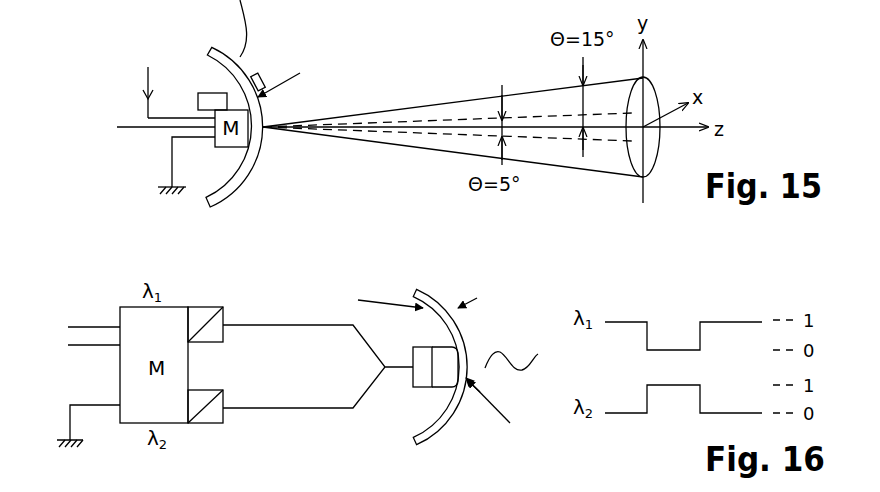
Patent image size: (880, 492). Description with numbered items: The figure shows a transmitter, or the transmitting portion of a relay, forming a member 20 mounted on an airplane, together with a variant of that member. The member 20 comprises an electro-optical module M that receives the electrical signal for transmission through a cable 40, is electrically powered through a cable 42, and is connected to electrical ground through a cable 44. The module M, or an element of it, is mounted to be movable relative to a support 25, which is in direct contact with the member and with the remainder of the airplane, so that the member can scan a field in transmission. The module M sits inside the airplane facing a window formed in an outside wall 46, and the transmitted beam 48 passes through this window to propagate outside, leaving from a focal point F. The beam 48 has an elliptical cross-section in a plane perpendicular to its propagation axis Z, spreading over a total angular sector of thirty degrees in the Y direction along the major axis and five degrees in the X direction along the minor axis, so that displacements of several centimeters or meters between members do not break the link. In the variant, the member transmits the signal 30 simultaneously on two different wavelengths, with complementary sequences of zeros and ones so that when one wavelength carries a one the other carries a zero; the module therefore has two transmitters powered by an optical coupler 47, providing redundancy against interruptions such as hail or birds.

In FIG. 15, the member 20 is at (225, 148).
In FIG. 16, the member 20 is at (459, 310).
In FIG. 15, the support 25 is at (203, 93).
In FIG. 15, the signal 30 is at (619, 191).
In FIG. 16, the signal 30 is at (565, 365).
In FIG. 15, the cable 40 is at (168, 117).
In FIG. 16, the cable 40 is at (88, 327).
In FIG. 15, the cable 42 is at (138, 128).
In FIG. 16, the cable 42 is at (88, 348).
In FIG. 15, the cable 44 is at (172, 163).
In FIG. 16, the outside wall 46 is at (443, 423).
In FIG. 16, the optical coupler 47 is at (275, 425).
In FIG. 15, the transmitted beam 48 is at (278, 76).
In FIG. 15, the focal point F is at (265, 131).